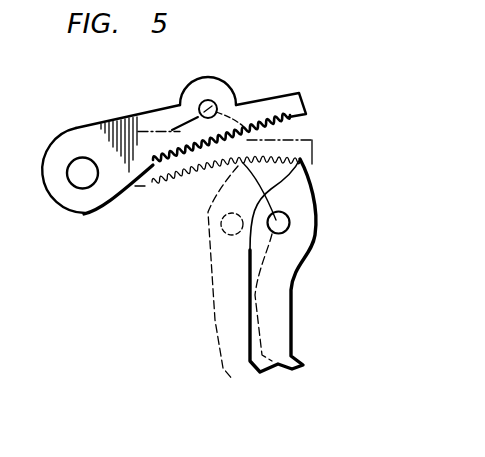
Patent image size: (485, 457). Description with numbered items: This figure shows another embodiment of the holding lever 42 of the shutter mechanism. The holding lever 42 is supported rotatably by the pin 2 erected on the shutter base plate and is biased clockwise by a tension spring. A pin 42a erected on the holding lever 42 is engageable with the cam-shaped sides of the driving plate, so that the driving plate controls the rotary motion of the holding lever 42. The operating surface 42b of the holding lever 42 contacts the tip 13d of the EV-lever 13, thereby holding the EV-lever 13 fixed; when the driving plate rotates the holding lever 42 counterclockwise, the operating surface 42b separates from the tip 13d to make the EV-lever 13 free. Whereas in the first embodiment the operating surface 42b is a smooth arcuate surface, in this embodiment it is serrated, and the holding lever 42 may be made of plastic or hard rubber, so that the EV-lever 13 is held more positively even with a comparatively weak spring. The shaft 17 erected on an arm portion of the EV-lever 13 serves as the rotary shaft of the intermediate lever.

The pin 2 is at (85, 178).
The EV-lever 13 is at (286, 302).
The tip of the EV-lever 13d is at (300, 160).
The shaft 17 is at (284, 223).
The holding lever 42 is at (152, 110).
The pin of the holding lever 42a is at (212, 105).
The operating surface of the holding lever 42b is at (307, 116).